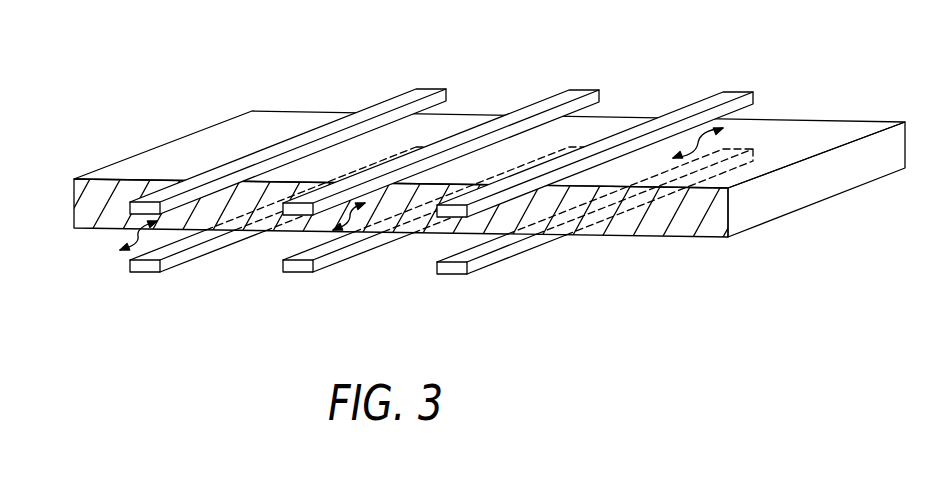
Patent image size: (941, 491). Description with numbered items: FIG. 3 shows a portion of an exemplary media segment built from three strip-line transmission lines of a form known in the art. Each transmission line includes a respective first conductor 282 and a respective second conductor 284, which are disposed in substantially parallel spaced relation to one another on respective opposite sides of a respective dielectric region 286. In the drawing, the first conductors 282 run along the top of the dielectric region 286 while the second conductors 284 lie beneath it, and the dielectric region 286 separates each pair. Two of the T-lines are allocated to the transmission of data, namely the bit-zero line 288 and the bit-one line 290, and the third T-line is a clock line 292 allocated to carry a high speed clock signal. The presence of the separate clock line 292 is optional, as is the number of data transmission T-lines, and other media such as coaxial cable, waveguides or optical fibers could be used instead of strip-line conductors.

The first conductor 282 is at (518, 113).
The second conductor 284 is at (448, 276).
The dielectric region 286 is at (705, 135).
The bit-0 T-line 288 is at (383, 108).
The bit-1 T-line 290 is at (543, 100).
The clock line 292 is at (727, 100).